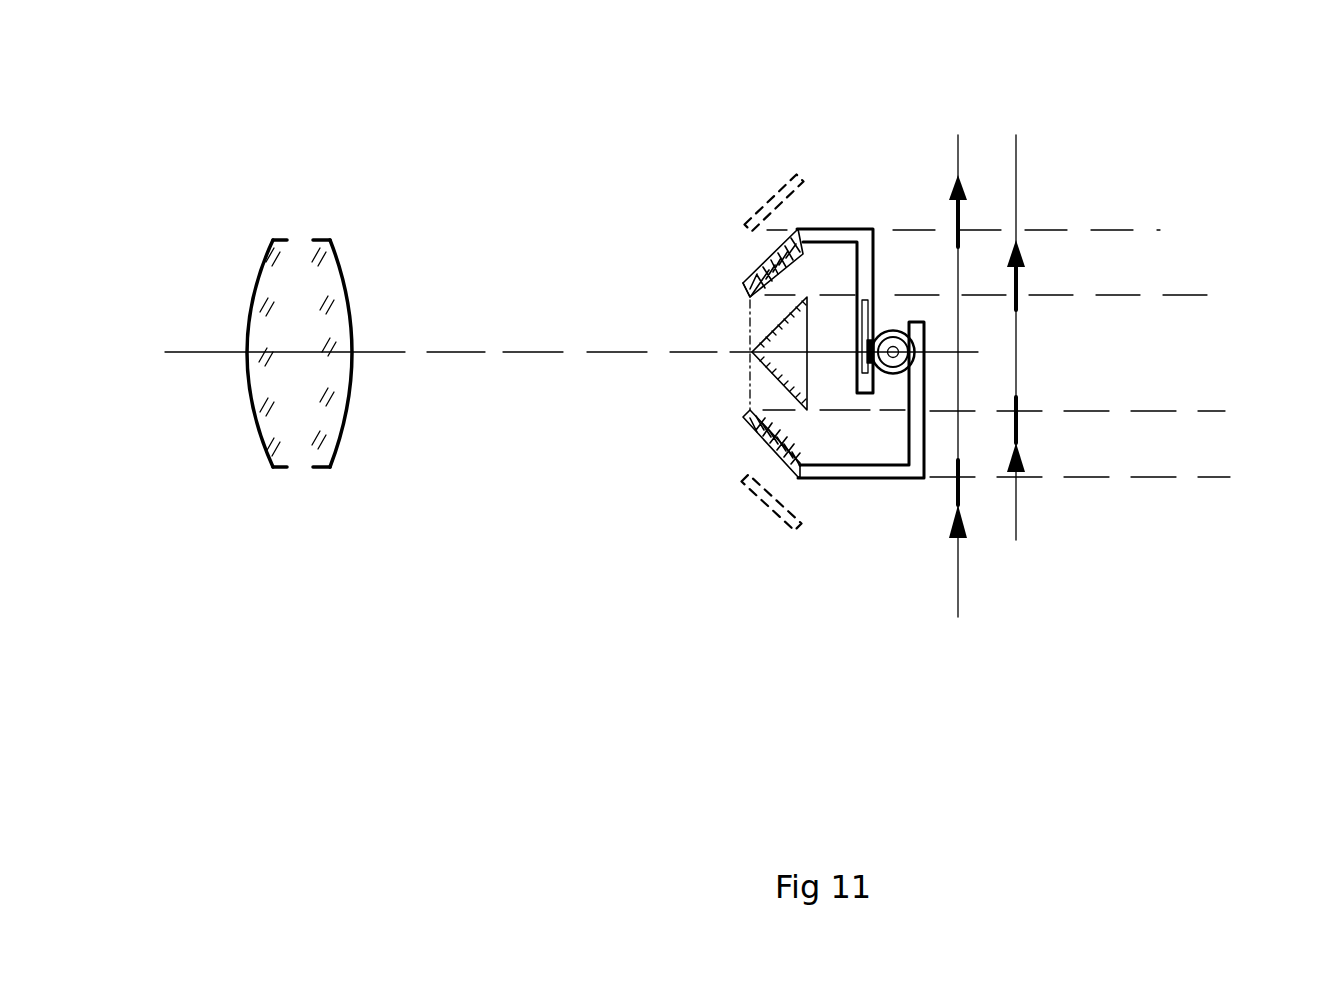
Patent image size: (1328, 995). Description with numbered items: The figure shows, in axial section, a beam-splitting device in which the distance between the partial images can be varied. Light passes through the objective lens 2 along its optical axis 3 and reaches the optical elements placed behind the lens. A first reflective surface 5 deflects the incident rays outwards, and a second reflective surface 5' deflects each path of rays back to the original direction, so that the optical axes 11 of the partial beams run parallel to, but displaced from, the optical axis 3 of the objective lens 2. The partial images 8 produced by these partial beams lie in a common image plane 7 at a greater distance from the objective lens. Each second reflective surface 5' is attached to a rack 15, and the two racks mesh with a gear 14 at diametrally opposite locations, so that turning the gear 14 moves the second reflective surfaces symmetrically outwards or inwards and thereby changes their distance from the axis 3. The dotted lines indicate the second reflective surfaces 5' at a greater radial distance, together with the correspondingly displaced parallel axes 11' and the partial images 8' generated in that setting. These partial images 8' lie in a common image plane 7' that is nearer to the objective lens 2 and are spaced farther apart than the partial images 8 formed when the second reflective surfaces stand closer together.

The objective lens 2 is at (305, 274).
The optical axis 3 is at (213, 352).
The first reflective surface 5 is at (743, 311).
The second reflective surface 5' is at (766, 338).
The image plane 7 is at (1065, 364).
The image plane 7' is at (989, 404).
The partial images 8 is at (1074, 294).
The partial images 8' is at (1019, 372).
The optical axes of the partial beams 11 is at (1042, 303).
The optical axes of the partial beams 11' is at (1007, 299).
The gear 14 is at (893, 335).
The rack 15 is at (862, 240).